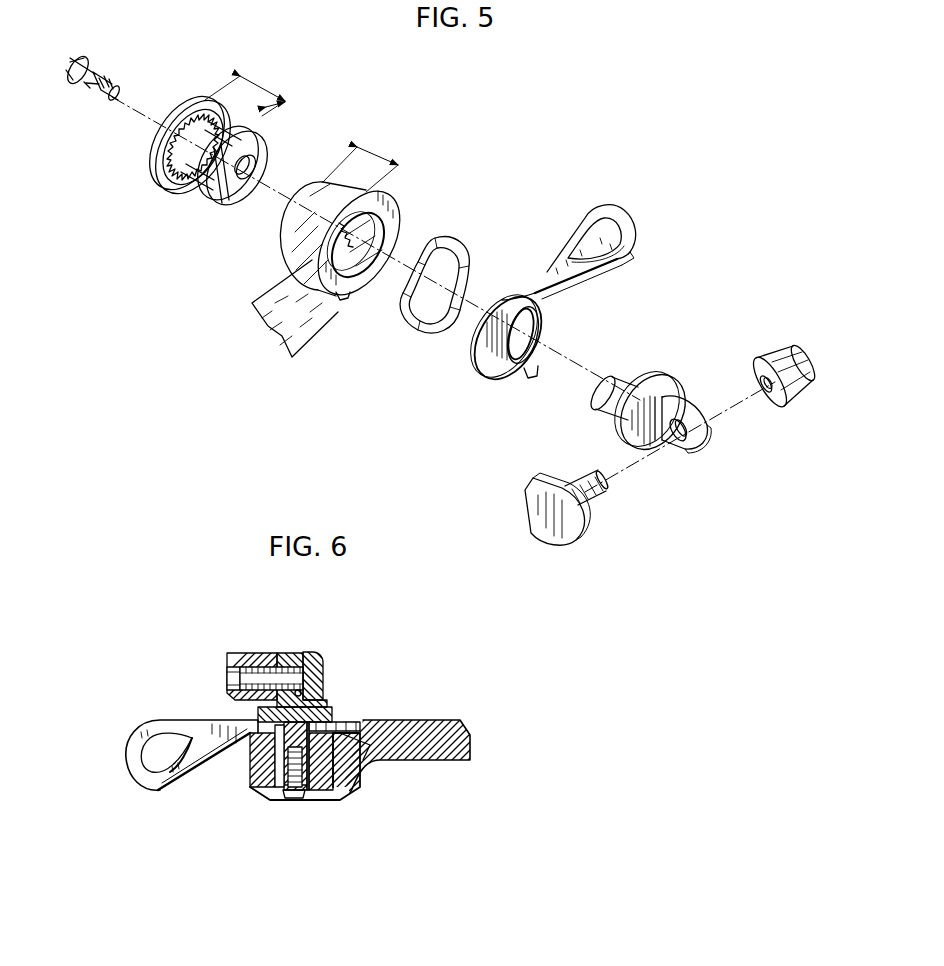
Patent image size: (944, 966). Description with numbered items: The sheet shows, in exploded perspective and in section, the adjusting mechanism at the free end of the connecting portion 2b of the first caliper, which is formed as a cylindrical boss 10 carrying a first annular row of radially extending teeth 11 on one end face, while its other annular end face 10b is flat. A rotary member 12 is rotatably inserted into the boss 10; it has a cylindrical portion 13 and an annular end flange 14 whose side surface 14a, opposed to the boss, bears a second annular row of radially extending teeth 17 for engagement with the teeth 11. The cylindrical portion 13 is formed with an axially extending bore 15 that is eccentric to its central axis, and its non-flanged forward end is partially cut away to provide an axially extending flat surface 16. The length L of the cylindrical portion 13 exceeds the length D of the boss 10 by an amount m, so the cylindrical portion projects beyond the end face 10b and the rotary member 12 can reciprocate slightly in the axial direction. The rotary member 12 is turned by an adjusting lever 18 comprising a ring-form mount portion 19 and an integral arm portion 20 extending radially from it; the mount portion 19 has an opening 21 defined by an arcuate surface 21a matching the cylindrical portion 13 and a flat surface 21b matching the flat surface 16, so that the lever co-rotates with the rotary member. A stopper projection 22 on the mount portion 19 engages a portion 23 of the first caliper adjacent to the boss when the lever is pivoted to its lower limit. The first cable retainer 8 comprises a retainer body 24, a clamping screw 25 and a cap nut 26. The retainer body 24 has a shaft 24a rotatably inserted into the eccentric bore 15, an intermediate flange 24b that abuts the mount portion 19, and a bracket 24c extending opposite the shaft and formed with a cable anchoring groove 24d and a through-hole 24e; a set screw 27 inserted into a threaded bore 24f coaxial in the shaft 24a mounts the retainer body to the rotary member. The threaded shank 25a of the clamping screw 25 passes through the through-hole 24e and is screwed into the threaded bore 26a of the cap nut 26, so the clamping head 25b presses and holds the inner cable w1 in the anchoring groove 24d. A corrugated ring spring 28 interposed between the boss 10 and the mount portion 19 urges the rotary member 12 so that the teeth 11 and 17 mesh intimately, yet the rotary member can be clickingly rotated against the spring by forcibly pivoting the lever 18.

In FIG. 5, the connecting portion 2b is at (270, 302).
In FIG. 6, the connecting portion 2b is at (445, 765).
In FIG. 5, the first cable retainer 8 is at (754, 372).
In FIG. 6, the first cable retainer 8 is at (398, 737).
In FIG. 5, the cylindrical boss 10 is at (373, 265).
In FIG. 6, the cylindrical boss 10 is at (252, 740).
In FIG. 5, the annular end face 10b is at (383, 203).
In FIG. 5, the first annular row of radially extending teeth 11 is at (358, 247).
In FIG. 6, the first annular row of radially extending teeth 11 is at (278, 780).
In FIG. 5, the rotary member 12 is at (196, 170).
In FIG. 6, the rotary member 12 is at (398, 760).
In FIG. 5, the cylindrical portion 13 is at (190, 190).
In FIG. 6, the cylindrical portion 13 is at (398, 750).
In FIG. 5, the annular end flange 14 is at (150, 165).
In FIG. 6, the annular end flange 14 is at (398, 750).
In FIG. 5, the side surface 14a is at (200, 108).
In FIG. 5, the axially extending bore 15 is at (258, 166).
In FIG. 5, the flat surface 16 is at (218, 205).
In FIG. 5, the second annular row of radially extending teeth 17 is at (163, 195).
In FIG. 6, the second annular row of radially extending teeth 17 is at (285, 792).
In FIG. 5, the adjusting lever 18 is at (601, 264).
In FIG. 6, the adjusting lever 18 is at (186, 750).
In FIG. 5, the ring-form mount portion 19 is at (497, 383).
In FIG. 6, the ring-form mount portion 19 is at (358, 727).
In FIG. 5, the arm portion 20 is at (608, 268).
In FIG. 6, the arm portion 20 is at (150, 790).
In FIG. 5, the opening 21 is at (528, 323).
In FIG. 6, the opening 21 is at (378, 750).
In FIG. 5, the arcuate surface 21a is at (525, 300).
In FIG. 5, the flat surface 21b is at (506, 305).
In FIG. 5, the stopper projection 22 is at (540, 366).
In FIG. 5, the portion of the first caliper 23 is at (343, 303).
In FIG. 5, the retainer body 24 is at (653, 413).
In FIG. 6, the retainer body 24 is at (398, 745).
In FIG. 5, the shaft 24a is at (618, 383).
In FIG. 6, the shaft 24a is at (268, 775).
In FIG. 5, the intermediate flange 24b is at (622, 428).
In FIG. 6, the intermediate flange 24b is at (335, 712).
In FIG. 5, the bracket 24c is at (700, 452).
In FIG. 6, the bracket 24c is at (297, 653).
In FIG. 5, the cable anchoring groove 24d is at (664, 398).
In FIG. 5, the through-hole 24e is at (674, 452).
In FIG. 6, the through-hole 24e is at (277, 660).
In FIG. 6, the threaded bore 24f is at (280, 792).
In FIG. 5, the clamping screw 25 is at (559, 532).
In FIG. 6, the clamping screw 25 is at (398, 738).
In FIG. 5, the threaded shank 25a is at (600, 496).
In FIG. 5, the clamping head 25b is at (577, 540).
In FIG. 5, the cap nut 26 is at (754, 401).
In FIG. 6, the cap nut 26 is at (398, 749).
In FIG. 5, the threaded bore 26a is at (757, 385).
In FIG. 6, the threaded bore 26a is at (228, 672).
In FIG. 5, the set screw 27 is at (88, 55).
In FIG. 6, the set screw 27 is at (295, 800).
In FIG. 5, the corrugated ring spring 28 is at (455, 248).
In FIG. 6, the corrugated ring spring 28 is at (372, 745).
In FIG. 5, the length of the cylindrical portion L is at (270, 78).
In FIG. 5, the amount m is at (290, 103).
In FIG. 5, the length of the boss D is at (398, 153).
In FIG. 6, the inner cable w1 is at (301, 691).